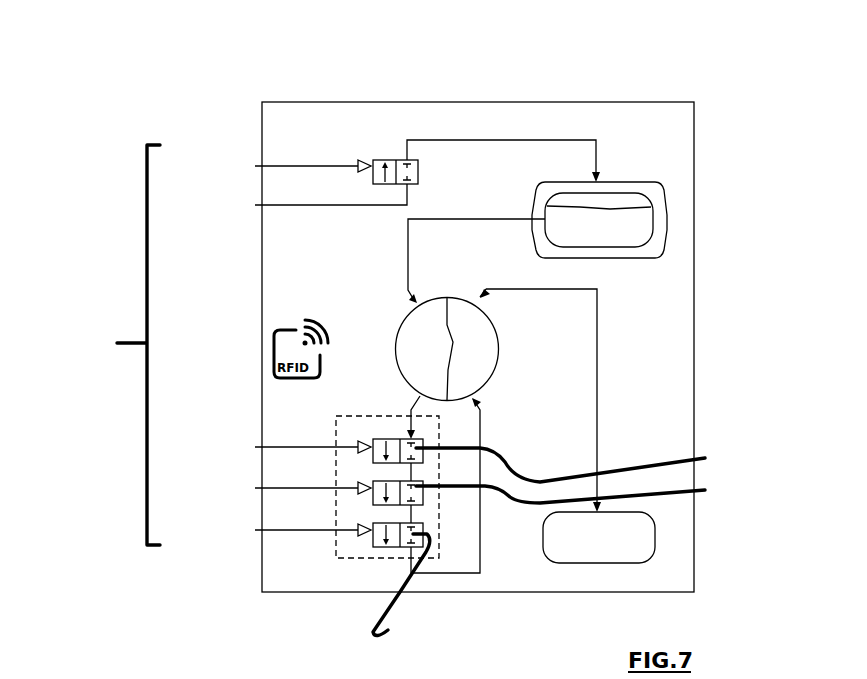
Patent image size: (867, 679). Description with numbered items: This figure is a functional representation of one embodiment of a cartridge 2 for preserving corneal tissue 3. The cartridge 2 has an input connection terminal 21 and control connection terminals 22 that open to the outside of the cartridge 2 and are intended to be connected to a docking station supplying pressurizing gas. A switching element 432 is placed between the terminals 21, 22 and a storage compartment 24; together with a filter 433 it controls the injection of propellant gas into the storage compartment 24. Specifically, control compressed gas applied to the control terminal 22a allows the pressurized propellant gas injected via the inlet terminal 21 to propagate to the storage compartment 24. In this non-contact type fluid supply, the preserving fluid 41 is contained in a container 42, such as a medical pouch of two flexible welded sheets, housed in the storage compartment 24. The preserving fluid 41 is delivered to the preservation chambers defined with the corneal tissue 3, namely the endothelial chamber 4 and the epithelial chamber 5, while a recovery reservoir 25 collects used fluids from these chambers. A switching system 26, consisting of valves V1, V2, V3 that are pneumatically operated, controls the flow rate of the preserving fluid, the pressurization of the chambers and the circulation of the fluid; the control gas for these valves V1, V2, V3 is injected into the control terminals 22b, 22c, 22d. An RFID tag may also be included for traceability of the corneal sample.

The cartridge 2 is at (287, 117).
The control connection terminal 22 is at (118, 345).
The control terminal 22a is at (255, 166).
The control terminal 22b is at (255, 447).
The control terminal 22c is at (255, 488).
The control terminal 22d is at (255, 530).
The input connection terminal 21 is at (255, 207).
The switching element 432 is at (397, 160).
The filter 433 is at (497, 138).
The container 42 is at (627, 195).
The preserving fluid 41 is at (636, 213).
The storage compartment 24 is at (545, 200).
The endothelial chamber 4 is at (403, 335).
The epithelial chamber 5 is at (473, 363).
The corneal tissue 3 is at (455, 345).
The valve V1 is at (576, 459).
The valve V2 is at (576, 490).
The valve V3 is at (401, 588).
The recovery reservoir 25 is at (572, 547).
The switching system 26 is at (383, 557).